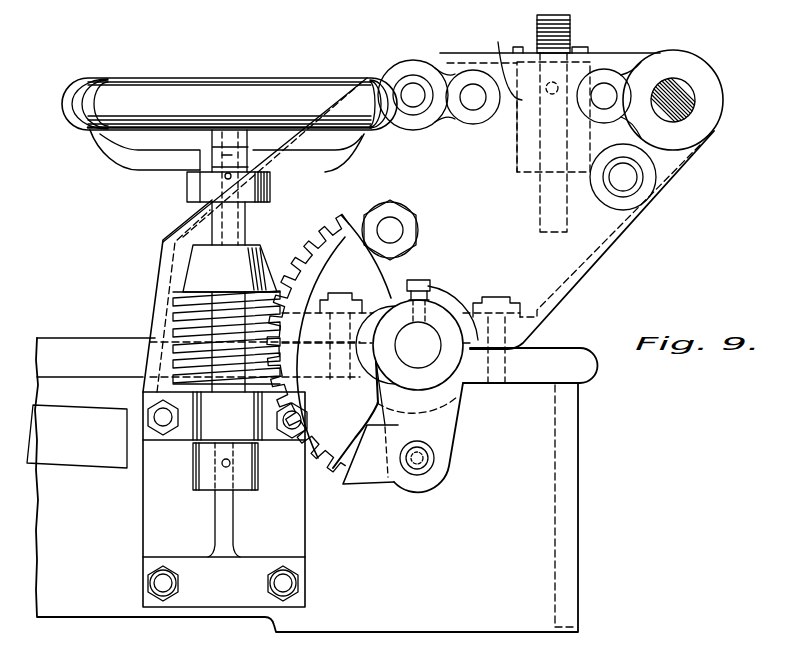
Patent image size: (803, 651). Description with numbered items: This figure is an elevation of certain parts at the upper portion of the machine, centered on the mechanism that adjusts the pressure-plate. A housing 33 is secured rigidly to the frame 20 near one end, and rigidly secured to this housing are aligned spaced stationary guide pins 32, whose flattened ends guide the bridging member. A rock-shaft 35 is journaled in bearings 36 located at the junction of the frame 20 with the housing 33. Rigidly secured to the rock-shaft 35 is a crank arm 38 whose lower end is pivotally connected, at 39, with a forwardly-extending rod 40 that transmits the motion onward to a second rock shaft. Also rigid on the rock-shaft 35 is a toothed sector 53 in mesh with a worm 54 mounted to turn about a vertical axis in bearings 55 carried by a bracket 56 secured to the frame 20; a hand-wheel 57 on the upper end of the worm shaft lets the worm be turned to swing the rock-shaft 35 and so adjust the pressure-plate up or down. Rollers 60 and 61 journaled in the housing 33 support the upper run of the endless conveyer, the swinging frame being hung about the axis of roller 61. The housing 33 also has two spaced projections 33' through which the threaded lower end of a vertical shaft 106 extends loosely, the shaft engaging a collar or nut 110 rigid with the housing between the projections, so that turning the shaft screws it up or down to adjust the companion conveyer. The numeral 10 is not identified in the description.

The hand-wheel 57 is at (229, 161).
The roller 60 is at (413, 93).
The collar or nut 110 is at (485, 57).
The vertical shaft 106 is at (572, 30).
The roller 61 is at (697, 98).
The housing 33 is at (498, 215).
The projections of the housing 33' is at (488, 136).
The toothed sector 53 is at (324, 218).
The stationary guide pins 32 is at (396, 233).
The rock-shaft 35 is at (417, 346).
The crank arm 38 is at (443, 424).
The pivotal connection 39 is at (428, 463).
The bearings 36 is at (468, 385).
The forwardly-extending rod 40 is at (368, 476).
The bearings 55 is at (213, 265).
The worm 54 is at (178, 330).
The bracket 56 is at (225, 403).
The frame 20 is at (306, 485).
The frame 10 is at (578, 643).